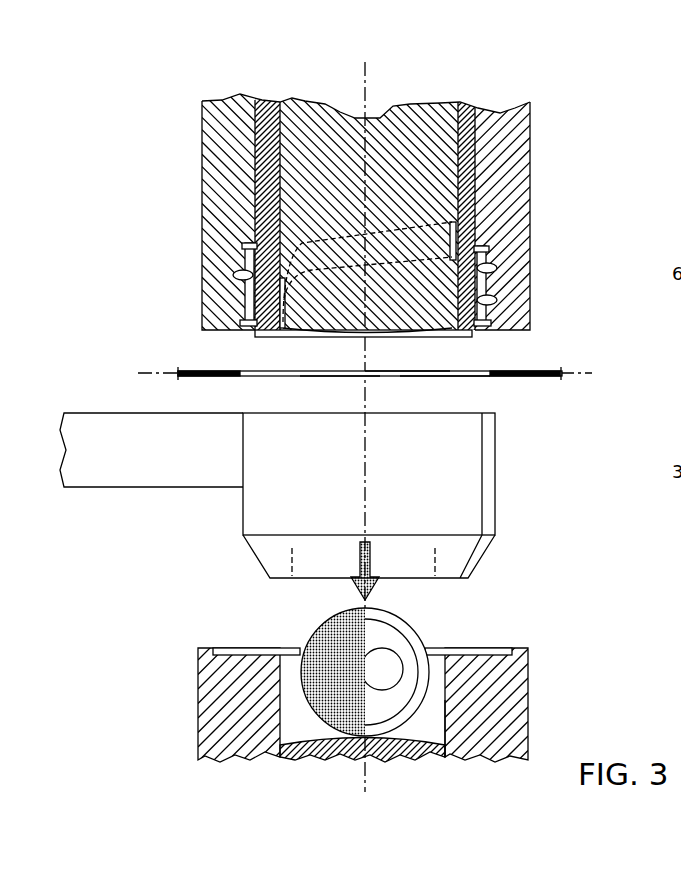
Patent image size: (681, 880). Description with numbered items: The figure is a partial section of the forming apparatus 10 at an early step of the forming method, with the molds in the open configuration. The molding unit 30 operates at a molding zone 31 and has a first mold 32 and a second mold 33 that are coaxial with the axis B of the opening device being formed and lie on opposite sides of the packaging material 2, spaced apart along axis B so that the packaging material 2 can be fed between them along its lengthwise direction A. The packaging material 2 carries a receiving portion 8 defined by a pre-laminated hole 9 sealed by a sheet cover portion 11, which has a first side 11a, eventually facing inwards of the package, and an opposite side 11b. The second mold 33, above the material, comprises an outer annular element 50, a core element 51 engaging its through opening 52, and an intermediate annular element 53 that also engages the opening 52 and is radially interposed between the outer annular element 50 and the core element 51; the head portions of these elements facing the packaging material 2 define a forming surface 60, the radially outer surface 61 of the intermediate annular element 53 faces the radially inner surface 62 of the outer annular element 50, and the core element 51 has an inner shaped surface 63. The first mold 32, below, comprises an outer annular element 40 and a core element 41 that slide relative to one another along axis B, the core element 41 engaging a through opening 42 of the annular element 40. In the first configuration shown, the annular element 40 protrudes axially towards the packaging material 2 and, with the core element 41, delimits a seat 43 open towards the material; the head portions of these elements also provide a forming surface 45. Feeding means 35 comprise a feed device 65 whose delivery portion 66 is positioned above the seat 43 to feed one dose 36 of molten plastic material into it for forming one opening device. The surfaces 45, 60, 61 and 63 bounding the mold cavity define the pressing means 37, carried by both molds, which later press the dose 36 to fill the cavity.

The forming apparatus 10 is at (373, 259).
The second mold 33 is at (232, 94).
The intermediate annular element 53 is at (268, 112).
The inner shaped surface 63 is at (352, 260).
The core element 51 is at (422, 125).
The through opening 52 is at (266, 152).
The outer annular element 50 is at (230, 185).
The radially inner surface 62 is at (262, 261).
The radially outer surface 61 is at (250, 310).
The forming surface 60 is at (351, 334).
The packaging material 2 is at (331, 389).
The hole 9 is at (247, 366).
The cover portion 11 is at (455, 367).
The side of cover portion 11a is at (337, 382).
The side of cover portion 11b is at (377, 368).
The receiving portion 8 is at (452, 379).
The pressing means 37 is at (524, 346).
The feeding means 35 is at (63, 455).
The feed device 65 is at (157, 455).
The molding zone 31 is at (277, 506).
The delivery portion 66 is at (412, 552).
The molding unit 30 is at (372, 613).
The forming surface 45 is at (239, 647).
The seat 43 is at (290, 682).
The dose 36 is at (400, 660).
The outer annular element 40 is at (495, 697).
The core element 41 is at (350, 757).
The through opening 42 is at (440, 708).
The first mold 32 is at (459, 772).
The lengthwise direction A is at (140, 373).
The axis B is at (366, 88).